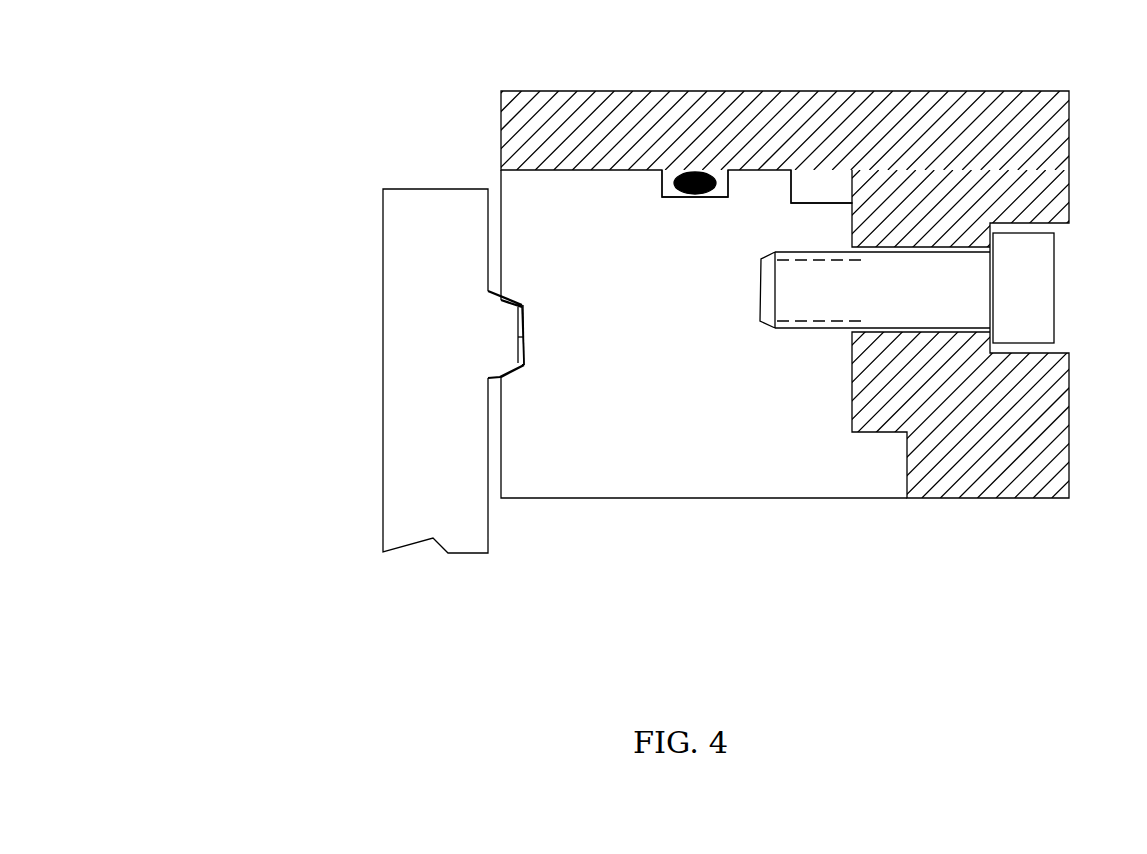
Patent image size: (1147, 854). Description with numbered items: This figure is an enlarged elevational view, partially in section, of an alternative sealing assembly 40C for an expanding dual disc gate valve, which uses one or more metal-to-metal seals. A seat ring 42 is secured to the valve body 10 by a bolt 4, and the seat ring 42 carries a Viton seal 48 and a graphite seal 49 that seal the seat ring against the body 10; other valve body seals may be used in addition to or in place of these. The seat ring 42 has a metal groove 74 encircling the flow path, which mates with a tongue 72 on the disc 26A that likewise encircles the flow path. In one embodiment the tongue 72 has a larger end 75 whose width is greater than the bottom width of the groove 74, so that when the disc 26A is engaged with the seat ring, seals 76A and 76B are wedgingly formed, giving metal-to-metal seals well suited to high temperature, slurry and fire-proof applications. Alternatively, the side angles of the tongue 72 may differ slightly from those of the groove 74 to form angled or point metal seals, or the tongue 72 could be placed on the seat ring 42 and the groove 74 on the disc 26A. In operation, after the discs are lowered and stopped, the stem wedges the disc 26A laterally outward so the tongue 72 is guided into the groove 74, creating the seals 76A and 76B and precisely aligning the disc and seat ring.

The bolt 4 is at (1062, 295).
The valve body 10 is at (975, 108).
The disc 26A is at (401, 347).
The sealing assembly 40C is at (254, 85).
The seat ring 42 is at (703, 468).
The Viton seal 48 is at (697, 172).
The graphite seal 49 is at (823, 190).
The tongue 72 is at (520, 360).
The metal groove 74 is at (527, 318).
The end 75 is at (521, 337).
The seal 76A is at (505, 345).
The seal 76B is at (513, 298).